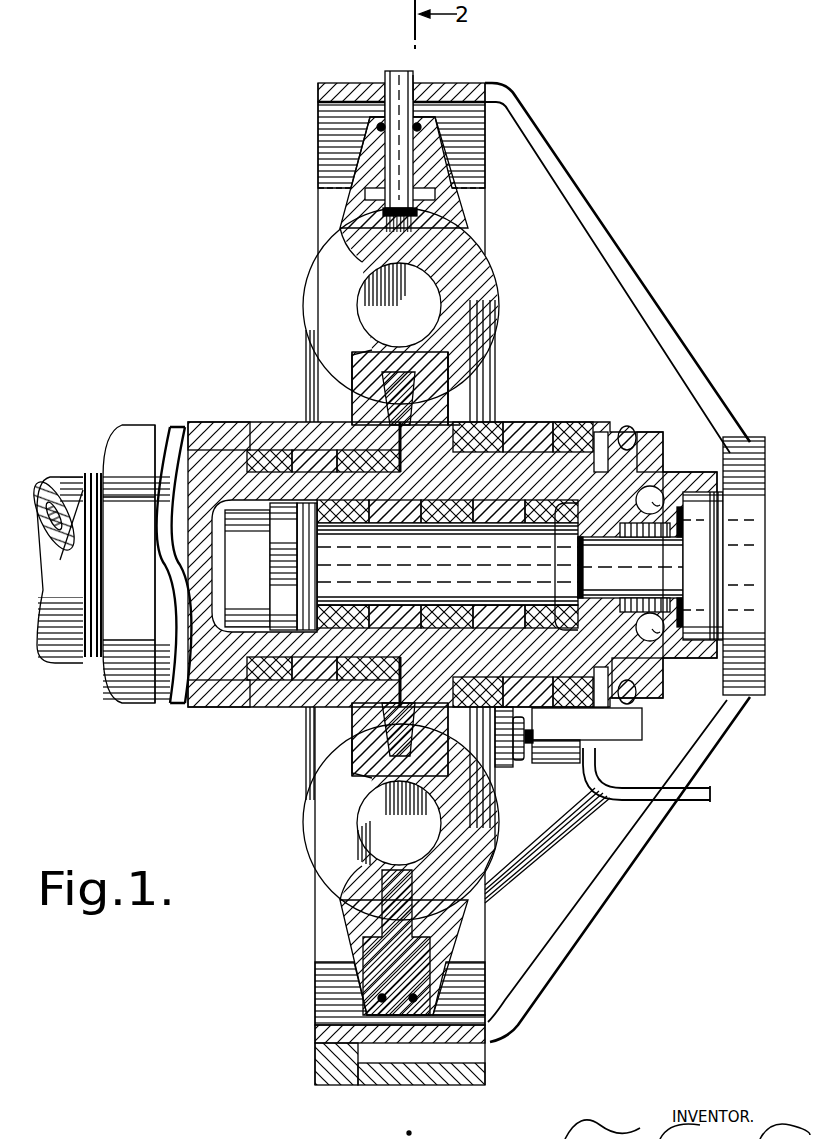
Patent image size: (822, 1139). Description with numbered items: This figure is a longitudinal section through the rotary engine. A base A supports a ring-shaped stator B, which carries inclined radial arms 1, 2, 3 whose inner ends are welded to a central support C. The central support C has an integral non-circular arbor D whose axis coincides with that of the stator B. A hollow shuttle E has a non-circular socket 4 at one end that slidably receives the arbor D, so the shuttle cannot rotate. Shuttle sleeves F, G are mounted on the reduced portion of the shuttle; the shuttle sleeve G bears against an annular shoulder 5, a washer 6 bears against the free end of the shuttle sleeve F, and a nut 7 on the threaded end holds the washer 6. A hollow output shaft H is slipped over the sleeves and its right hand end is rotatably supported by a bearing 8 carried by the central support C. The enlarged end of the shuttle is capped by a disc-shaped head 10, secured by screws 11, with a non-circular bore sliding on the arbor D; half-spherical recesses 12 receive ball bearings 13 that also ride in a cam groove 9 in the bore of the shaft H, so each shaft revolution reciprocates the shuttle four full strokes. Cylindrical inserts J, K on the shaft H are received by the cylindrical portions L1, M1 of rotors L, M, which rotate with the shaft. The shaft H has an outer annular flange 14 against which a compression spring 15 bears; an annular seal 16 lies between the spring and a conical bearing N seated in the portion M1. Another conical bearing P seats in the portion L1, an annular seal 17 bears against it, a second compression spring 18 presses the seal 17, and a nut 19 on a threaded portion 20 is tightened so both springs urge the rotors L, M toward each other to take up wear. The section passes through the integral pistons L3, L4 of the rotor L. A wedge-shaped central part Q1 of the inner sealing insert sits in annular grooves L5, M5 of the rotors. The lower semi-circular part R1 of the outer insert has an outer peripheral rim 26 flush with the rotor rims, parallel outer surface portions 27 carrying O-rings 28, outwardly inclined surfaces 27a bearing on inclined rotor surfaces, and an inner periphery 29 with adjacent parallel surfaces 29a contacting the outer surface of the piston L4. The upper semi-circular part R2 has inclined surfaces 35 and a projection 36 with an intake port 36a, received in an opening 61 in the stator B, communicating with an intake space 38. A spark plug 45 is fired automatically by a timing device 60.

The radial arm 1 is at (598, 226).
The radial arm 2 is at (605, 890).
The radial arm 3 is at (530, 830).
The non-circular socket 4 is at (612, 598).
The annular shoulder 5 is at (548, 592).
The washer 6 is at (310, 565).
The nut 7 is at (280, 572).
The bearing 8 is at (700, 572).
The cam groove 9 is at (660, 490).
The disc-shaped head 10 is at (647, 620).
The screws 11 is at (677, 520).
The half-spherical recesses 12 is at (637, 507).
The ball bearings 13 is at (637, 620).
The outer annular flange 14 is at (655, 448).
The compression spring 15 is at (628, 430).
The annular seal 16 is at (603, 702).
The annular seal 17 is at (197, 706).
The compression spring 18 is at (176, 426).
The nut 19 is at (124, 446).
The threaded portion 20 is at (96, 657).
The outer peripheral rim 26 is at (400, 1017).
The outer surface portions 27 is at (375, 992).
The outwardly inclined surfaces 27a is at (427, 958).
The circular O-rings 28 is at (343, 118).
The inner periphery 29 is at (397, 887).
The parallel surfaces 29a is at (487, 903).
The outwardly inclined surfaces 35 is at (380, 127).
The outwardly extending projection 36 is at (385, 85).
The intake port 36a is at (401, 72).
The space 38 is at (364, 281).
The spark plug 45 is at (514, 760).
The timing device 60 is at (568, 752).
The opening 61 is at (413, 90).
The base A is at (320, 1066).
The stator B is at (468, 222).
The central support C is at (765, 472).
The arbor D is at (630, 567).
The hollow shuttle E is at (302, 570).
The shuttle sleeve F is at (389, 612).
The shuttle sleeve G is at (449, 612).
The hollow output shaft H is at (270, 490).
The cylindrical insert J is at (305, 692).
The cylindrical insert K is at (568, 737).
The rotor L is at (345, 210).
The cylindrical portion L1 is at (263, 692).
The integral piston L3 is at (436, 334).
The integral piston L4 is at (452, 840).
The annular groove L5 is at (393, 410).
The rotor M is at (492, 300).
The cylindrical portion M1 is at (585, 430).
The annular groove M5 is at (440, 402).
The conical bearing N is at (581, 428).
The conical bearing P is at (216, 440).
The central part Q1 is at (396, 378).
The lower semi-circular part R1 is at (397, 932).
The upper semi-circular part R2 is at (380, 158).